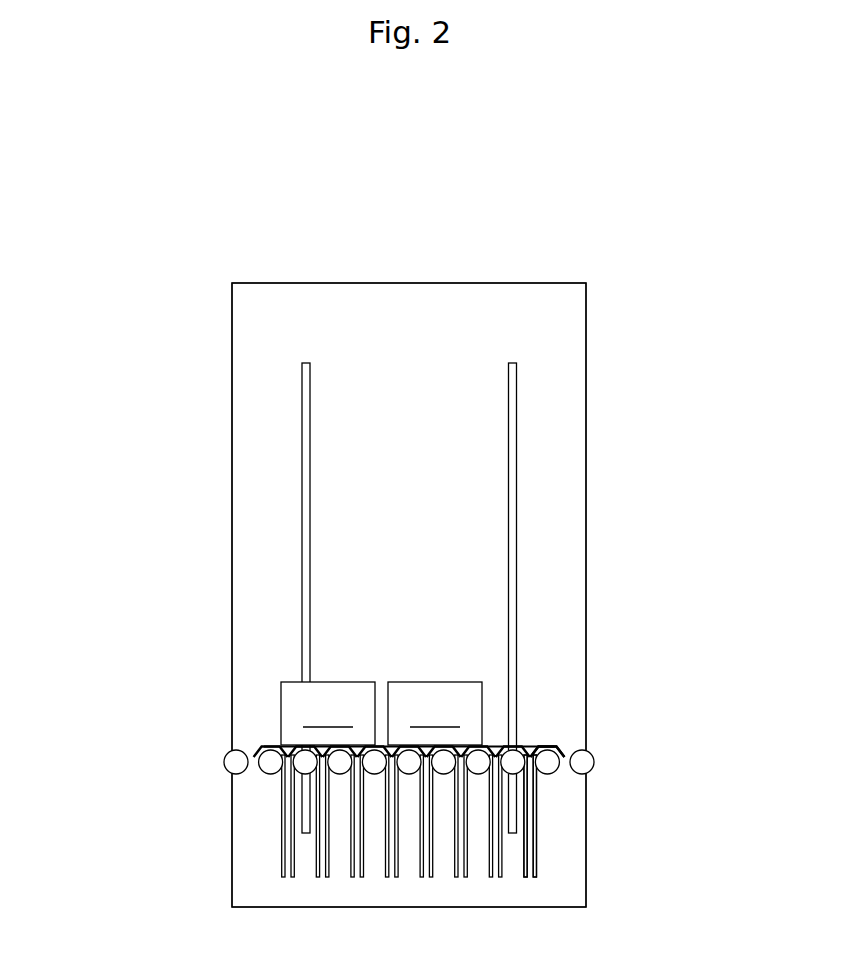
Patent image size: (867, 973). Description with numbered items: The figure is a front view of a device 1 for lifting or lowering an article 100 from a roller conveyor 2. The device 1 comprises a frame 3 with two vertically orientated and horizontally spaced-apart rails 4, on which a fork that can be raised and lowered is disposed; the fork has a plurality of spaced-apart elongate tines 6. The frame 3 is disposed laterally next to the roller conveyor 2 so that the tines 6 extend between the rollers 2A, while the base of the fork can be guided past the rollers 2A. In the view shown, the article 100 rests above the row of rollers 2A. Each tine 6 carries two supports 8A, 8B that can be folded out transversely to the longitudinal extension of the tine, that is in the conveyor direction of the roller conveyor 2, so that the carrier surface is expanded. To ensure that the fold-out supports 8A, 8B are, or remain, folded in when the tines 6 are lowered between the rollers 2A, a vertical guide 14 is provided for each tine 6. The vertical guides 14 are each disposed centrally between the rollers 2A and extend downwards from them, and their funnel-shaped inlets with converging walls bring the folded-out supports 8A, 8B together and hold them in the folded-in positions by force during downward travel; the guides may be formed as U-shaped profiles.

The device 1 is at (480, 270).
The roller conveyor 2 is at (602, 753).
The rollers 2A is at (236, 760).
The frame 3 is at (570, 374).
The rails 4 is at (300, 563).
The tines 6 is at (286, 772).
The fold-out support 8A is at (519, 743).
The fold-out support 8B is at (545, 743).
The vertical guide 14 is at (537, 867).
The article 100 is at (381, 713).